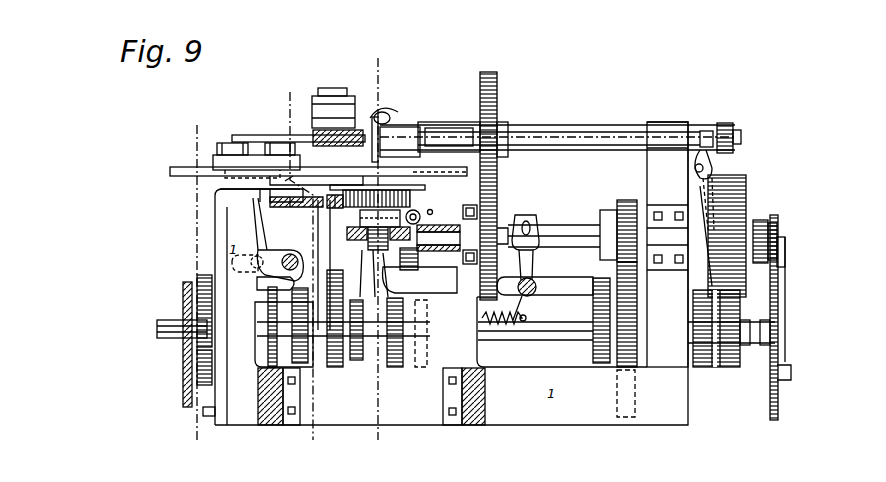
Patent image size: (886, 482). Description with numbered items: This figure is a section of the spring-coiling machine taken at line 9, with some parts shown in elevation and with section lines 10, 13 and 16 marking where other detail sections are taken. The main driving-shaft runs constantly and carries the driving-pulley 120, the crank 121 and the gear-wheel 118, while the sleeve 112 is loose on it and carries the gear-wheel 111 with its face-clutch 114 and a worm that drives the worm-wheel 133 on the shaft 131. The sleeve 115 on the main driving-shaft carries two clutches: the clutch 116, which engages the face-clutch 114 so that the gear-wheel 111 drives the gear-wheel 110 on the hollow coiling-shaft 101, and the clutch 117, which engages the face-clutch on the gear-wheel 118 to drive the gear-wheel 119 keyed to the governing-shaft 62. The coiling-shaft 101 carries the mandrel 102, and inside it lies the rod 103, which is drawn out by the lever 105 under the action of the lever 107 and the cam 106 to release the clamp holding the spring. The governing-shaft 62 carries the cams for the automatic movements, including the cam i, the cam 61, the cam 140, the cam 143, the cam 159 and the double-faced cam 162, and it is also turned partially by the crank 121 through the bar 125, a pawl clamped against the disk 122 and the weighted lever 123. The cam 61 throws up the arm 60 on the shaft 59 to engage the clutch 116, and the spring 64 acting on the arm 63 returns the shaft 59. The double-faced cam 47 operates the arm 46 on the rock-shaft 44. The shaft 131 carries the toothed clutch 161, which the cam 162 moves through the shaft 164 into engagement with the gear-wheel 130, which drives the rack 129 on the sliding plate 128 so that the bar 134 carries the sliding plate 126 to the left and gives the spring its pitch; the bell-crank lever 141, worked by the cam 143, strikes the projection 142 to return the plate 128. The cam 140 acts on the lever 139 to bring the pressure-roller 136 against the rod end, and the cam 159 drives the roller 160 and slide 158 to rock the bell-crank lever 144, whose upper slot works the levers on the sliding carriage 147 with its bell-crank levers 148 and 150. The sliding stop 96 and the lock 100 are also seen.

The section line 9 is at (178, 348).
The section line 10 is at (374, 242).
The section line 13 is at (301, 259).
The section line 16 is at (190, 275).
The rock-shaft 44 is at (290, 255).
The arm 46 is at (293, 283).
The double-faced cam 47 is at (293, 313).
The shaft 59 is at (530, 296).
The arm 60 is at (545, 287).
The cam 61 is at (600, 310).
The governing-shaft 62 is at (522, 333).
The arm 63 is at (523, 312).
The spring 64 is at (505, 327).
The sliding stop 96 is at (412, 260).
The lock 100 is at (386, 112).
The hollow coiling-shaft 101 is at (550, 132).
The mandrel 102 is at (378, 112).
The rod 103 is at (735, 136).
The lever 105 is at (714, 162).
The cam 106 is at (712, 367).
The lever 107 is at (740, 192).
The gear-wheel 110 is at (498, 100).
The gear-wheel 111 is at (495, 192).
The sleeve 112 is at (443, 215).
The face-clutch 114 is at (503, 213).
The sleeve 115 is at (572, 222).
The clutch 116 is at (531, 218).
The clutch 117 is at (607, 208).
The gear-wheel 118 is at (640, 205).
The gear-wheel 119 is at (637, 302).
The driving-pulley 120 is at (703, 198).
The crank 121 is at (780, 272).
The disk 122 is at (780, 400).
The lever 123 is at (780, 312).
The bar 125 is at (786, 242).
The sliding plate 126 is at (299, 173).
The sliding plate 128 is at (270, 193).
The rack 129 is at (353, 210).
The gear-wheel 130 is at (385, 197).
The shaft 131 is at (377, 258).
The worm-wheel 133 is at (343, 178).
The bar 134 is at (303, 185).
The pressure-roller 136 is at (317, 96).
The lever 139 is at (363, 262).
The cam 140 is at (358, 307).
The bell-crank lever 141 is at (320, 250).
The projection 142 is at (322, 198).
The cam 143 is at (328, 318).
The bell-crank lever 144 is at (263, 228).
The sliding carriage 147 is at (256, 166).
The bell-crank lever 148 is at (271, 143).
The bell-crank lever 150 is at (224, 143).
The slide 158 is at (212, 312).
The cam 159 is at (202, 302).
The roller 160 is at (198, 377).
The toothed clutch 161 is at (362, 228).
The double-faced cam 162 is at (407, 347).
The shaft 164 is at (420, 215).
The cam i is at (187, 370).